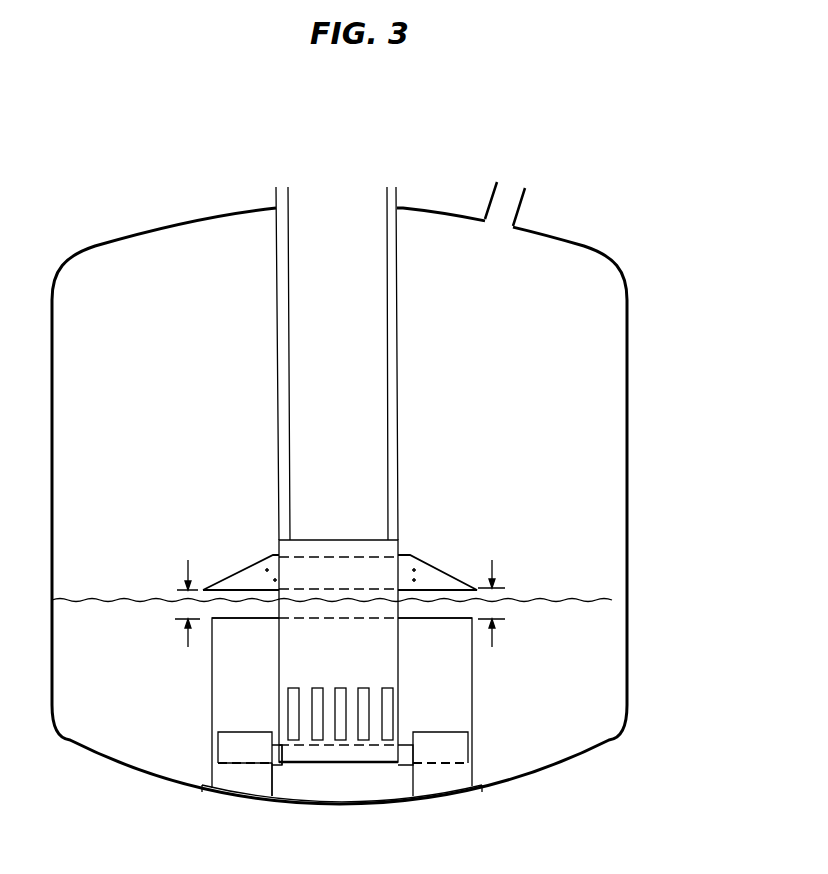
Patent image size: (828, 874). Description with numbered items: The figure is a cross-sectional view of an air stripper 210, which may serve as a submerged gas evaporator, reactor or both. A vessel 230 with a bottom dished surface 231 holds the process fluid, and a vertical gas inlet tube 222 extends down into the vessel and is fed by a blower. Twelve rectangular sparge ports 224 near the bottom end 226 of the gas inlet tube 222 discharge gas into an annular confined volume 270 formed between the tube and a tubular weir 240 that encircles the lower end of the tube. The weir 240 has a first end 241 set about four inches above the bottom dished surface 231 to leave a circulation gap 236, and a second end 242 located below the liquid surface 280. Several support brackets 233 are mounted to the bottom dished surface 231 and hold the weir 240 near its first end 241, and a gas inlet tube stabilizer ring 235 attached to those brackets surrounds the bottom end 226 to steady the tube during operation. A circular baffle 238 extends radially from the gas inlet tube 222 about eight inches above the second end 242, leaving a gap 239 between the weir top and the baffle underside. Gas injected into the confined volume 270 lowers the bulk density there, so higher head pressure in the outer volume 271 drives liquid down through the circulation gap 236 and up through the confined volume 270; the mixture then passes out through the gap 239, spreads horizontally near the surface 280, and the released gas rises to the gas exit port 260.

The air stripper 210 is at (371, 481).
The gas inlet tube 222 is at (397, 388).
The sparge ports 224 is at (388, 708).
The bottom end 226 is at (373, 767).
The vessel 230 is at (627, 452).
The bottom dished surface 231 is at (507, 788).
The support brackets 233 is at (275, 772).
The gas inlet tube stabilizer ring 235 is at (275, 768).
The circulation gap 236 is at (475, 770).
The baffle 238 is at (460, 562).
The gap 239 is at (177, 598).
The weir 240 is at (451, 703).
The first end 241 is at (478, 762).
The second end 242 is at (480, 620).
The gas exit port 260 is at (510, 188).
The confined volume 270 is at (265, 664).
The volume 271 is at (150, 744).
The surface 280 is at (603, 600).